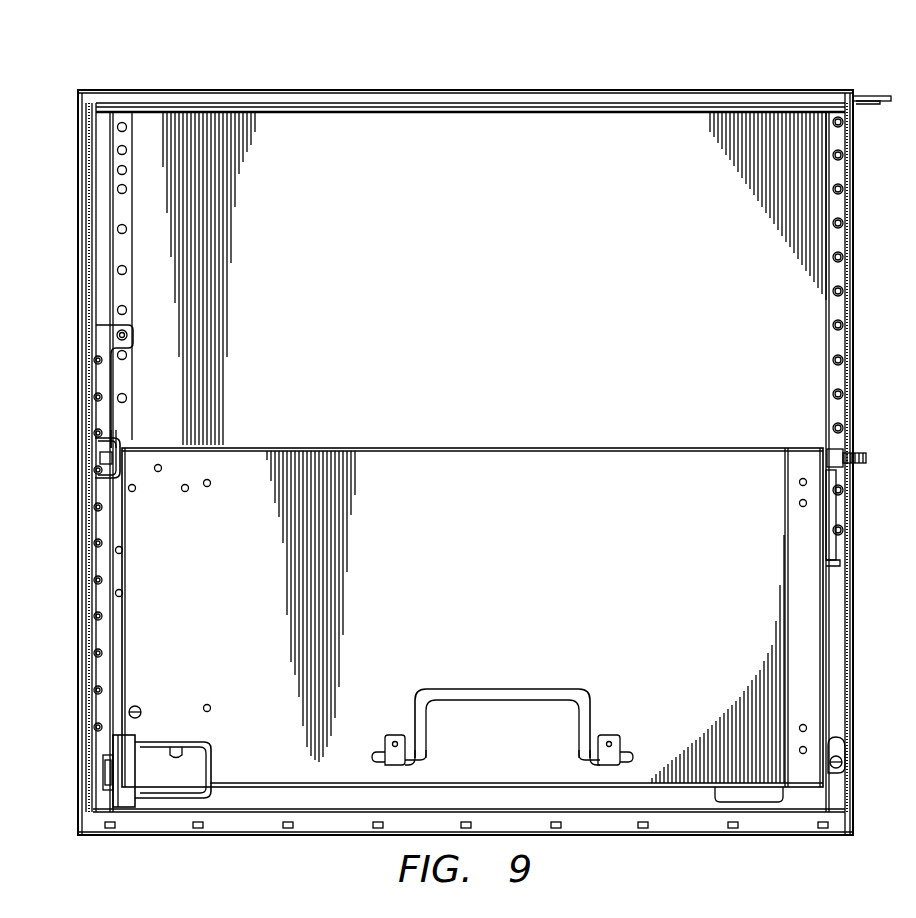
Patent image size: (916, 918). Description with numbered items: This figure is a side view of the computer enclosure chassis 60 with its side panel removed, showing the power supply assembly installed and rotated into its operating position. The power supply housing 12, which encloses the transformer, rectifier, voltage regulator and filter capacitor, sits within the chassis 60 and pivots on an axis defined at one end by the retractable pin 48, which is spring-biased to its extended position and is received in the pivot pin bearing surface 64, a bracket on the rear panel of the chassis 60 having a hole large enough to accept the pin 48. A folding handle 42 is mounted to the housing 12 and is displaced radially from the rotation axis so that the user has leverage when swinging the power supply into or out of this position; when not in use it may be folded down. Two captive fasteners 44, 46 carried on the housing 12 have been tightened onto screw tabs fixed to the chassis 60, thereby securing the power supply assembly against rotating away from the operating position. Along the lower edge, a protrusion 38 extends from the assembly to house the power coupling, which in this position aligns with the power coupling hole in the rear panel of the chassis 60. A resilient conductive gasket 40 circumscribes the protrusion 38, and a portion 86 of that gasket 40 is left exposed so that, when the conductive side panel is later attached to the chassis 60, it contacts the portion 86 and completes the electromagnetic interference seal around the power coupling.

The computer enclosure chassis 60 is at (468, 90).
The housing 12 is at (470, 446).
The pin 48 is at (105, 458).
The pivot pin bearing surface 64 is at (116, 438).
The fastener 44 is at (137, 705).
The conductive gasket 40 is at (128, 760).
The protrusion 38 is at (168, 782).
The portion of gasket 86 is at (121, 800).
The folding handle 42 is at (502, 688).
The fastener 46 is at (838, 752).